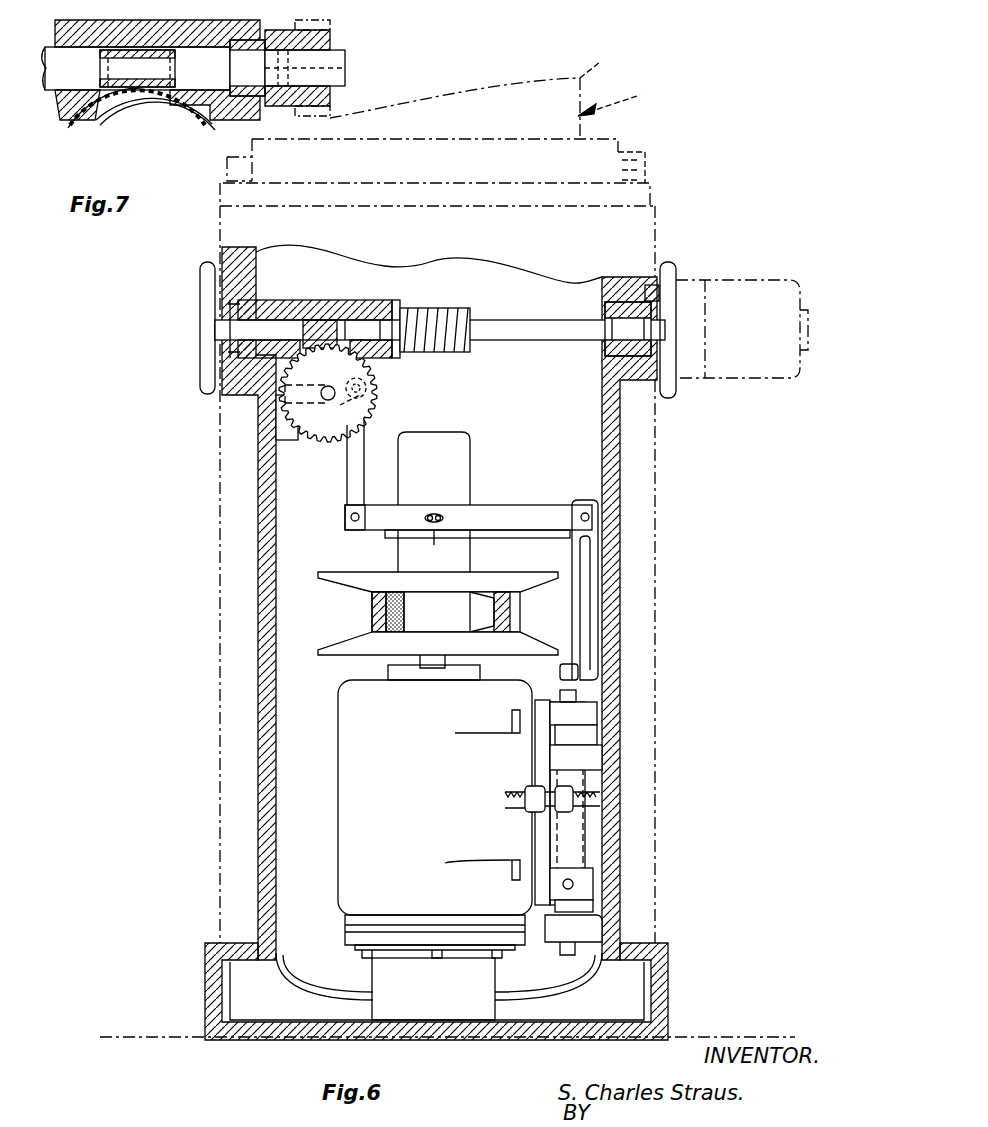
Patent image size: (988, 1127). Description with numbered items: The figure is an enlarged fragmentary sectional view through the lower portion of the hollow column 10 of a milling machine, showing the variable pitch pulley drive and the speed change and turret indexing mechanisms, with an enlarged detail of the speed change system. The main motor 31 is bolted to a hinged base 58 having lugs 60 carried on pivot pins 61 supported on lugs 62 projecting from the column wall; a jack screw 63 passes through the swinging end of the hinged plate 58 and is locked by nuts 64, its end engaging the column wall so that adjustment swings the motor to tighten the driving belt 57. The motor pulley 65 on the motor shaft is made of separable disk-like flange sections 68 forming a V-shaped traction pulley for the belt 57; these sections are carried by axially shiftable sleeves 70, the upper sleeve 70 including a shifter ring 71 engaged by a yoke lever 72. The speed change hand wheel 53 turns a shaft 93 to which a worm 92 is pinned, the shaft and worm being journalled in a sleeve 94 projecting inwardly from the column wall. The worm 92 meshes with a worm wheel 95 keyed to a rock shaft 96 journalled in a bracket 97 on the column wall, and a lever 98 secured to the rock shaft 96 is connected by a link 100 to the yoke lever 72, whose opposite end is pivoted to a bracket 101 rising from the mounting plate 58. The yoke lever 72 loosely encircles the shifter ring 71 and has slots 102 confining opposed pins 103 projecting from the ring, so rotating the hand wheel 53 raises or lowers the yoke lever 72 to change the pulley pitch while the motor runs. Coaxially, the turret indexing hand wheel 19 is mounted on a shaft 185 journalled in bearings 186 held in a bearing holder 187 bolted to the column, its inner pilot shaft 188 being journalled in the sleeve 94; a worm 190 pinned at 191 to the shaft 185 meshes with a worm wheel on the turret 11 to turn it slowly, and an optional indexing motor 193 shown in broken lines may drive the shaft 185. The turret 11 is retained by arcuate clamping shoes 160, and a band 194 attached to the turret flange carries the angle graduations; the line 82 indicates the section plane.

In FIG. 6, the column 10 is at (260, 566).
In FIG. 6, the turret 11 is at (622, 99).
In FIG. 6, the turret indexing hand wheel 19 is at (676, 304).
In FIG. 6, the main motor 31 is at (356, 720).
In FIG. 6, the speed change hand wheel 53 is at (205, 300).
In FIG. 6, the driving belt 57 is at (372, 610).
In FIG. 6, the hinged base 58 is at (535, 836).
In FIG. 6, the lugs 60 is at (590, 718).
In FIG. 6, the pivot pins 61 is at (572, 733).
In FIG. 6, the lugs 62 is at (590, 757).
In FIG. 6, the jack screw 63 is at (505, 792).
In FIG. 6, the nuts 64 is at (536, 786).
In FIG. 6, the motor pulley 65 is at (360, 572).
In FIG. 6, the flange sections 68 is at (498, 582).
In FIG. 6, the sleeves 70 is at (470, 452).
In FIG. 6, the shifter ring 71 is at (494, 538).
In FIG. 6, the yoke lever 72 is at (490, 508).
In FIG. 6, the lid line 82 is at (610, 71).
In FIG. 6, the worm 92 is at (325, 318).
In FIG. 7, the worm 92 is at (126, 98).
In FIG. 6, the shaft 93 is at (275, 325).
In FIG. 7, the shaft 93 is at (136, 68).
In FIG. 6, the sleeve 94 is at (370, 314).
In FIG. 7, the sleeve 94 is at (252, 110).
In FIG. 6, the worm wheel 95 is at (372, 410).
In FIG. 7, the worm wheel 95 is at (90, 125).
In FIG. 6, the rock shaft 96 is at (326, 440).
In FIG. 6, the bracket 97 is at (276, 430).
In FIG. 6, the lever 98 is at (342, 452).
In FIG. 6, the link 100 is at (350, 487).
In FIG. 6, the bracket 101 is at (586, 590).
In FIG. 6, the slots 102 is at (434, 512).
In FIG. 6, the pins 103 is at (434, 538).
In FIG. 6, the arcuate clamping shoes 160 is at (517, 139).
In FIG. 6, the indexing shaft 185 is at (530, 340).
In FIG. 6, the bearings 186 is at (610, 318).
In FIG. 6, the nut 187 is at (655, 380).
In FIG. 6, the pilot shaft 188 is at (398, 312).
In FIG. 7, the pilot shaft 188 is at (208, 126).
In FIG. 6, the worm 190 is at (465, 306).
In FIG. 7, the worm 190 is at (340, 38).
In FIG. 7, the pin 191 is at (320, 72).
In FIG. 6, the indexing motor 193 is at (760, 378).
In FIG. 6, the band 194 is at (645, 166).